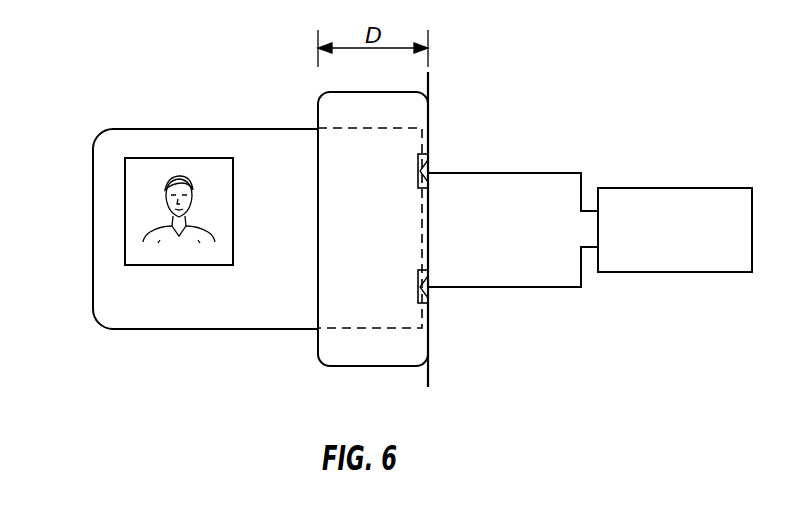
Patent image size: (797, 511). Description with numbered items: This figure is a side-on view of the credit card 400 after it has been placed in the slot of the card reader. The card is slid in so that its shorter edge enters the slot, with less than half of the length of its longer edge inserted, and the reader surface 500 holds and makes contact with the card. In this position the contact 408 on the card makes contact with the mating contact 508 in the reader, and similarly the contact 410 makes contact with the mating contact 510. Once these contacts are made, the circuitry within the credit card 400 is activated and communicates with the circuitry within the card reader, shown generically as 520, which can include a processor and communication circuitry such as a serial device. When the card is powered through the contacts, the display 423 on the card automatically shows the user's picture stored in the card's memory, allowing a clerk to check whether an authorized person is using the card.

The credit card 400 is at (163, 329).
The display 423 is at (125, 212).
The surface 500 is at (368, 366).
The contact 408 is at (418, 163).
The contact 410 is at (418, 278).
The mating contact 508 is at (428, 170).
The mating contact 510 is at (428, 285).
The circuitry within the card reader 520 is at (731, 188).